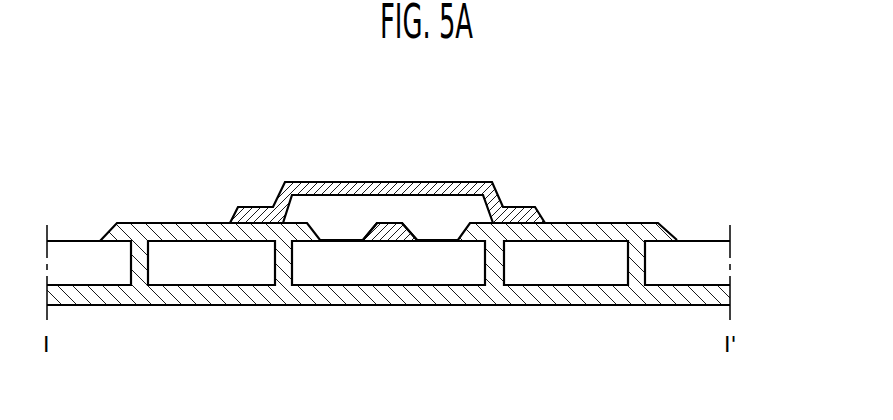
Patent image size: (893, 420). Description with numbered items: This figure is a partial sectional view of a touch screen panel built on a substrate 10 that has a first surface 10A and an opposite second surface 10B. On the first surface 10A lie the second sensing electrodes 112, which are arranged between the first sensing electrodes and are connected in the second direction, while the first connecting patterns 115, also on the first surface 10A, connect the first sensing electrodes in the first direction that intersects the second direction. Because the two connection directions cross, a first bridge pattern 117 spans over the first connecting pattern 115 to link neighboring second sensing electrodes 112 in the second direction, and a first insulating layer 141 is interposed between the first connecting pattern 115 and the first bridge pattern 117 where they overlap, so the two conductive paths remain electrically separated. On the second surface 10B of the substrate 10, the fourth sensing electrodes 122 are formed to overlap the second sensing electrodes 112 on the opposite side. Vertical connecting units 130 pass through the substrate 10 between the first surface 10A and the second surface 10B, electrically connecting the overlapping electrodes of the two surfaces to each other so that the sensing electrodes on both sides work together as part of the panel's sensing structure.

The substrate 10 is at (717, 266).
The first surface 10A is at (712, 238).
The second surface 10B is at (712, 285).
The second sensing electrodes 112 is at (580, 228).
The first connecting patterns 115 is at (387, 231).
The first bridge patterns 117 is at (470, 182).
The fourth sensing electrodes 122 is at (533, 305).
The vertical connecting units 130 is at (139, 272).
The first insulating layer 141 is at (332, 216).